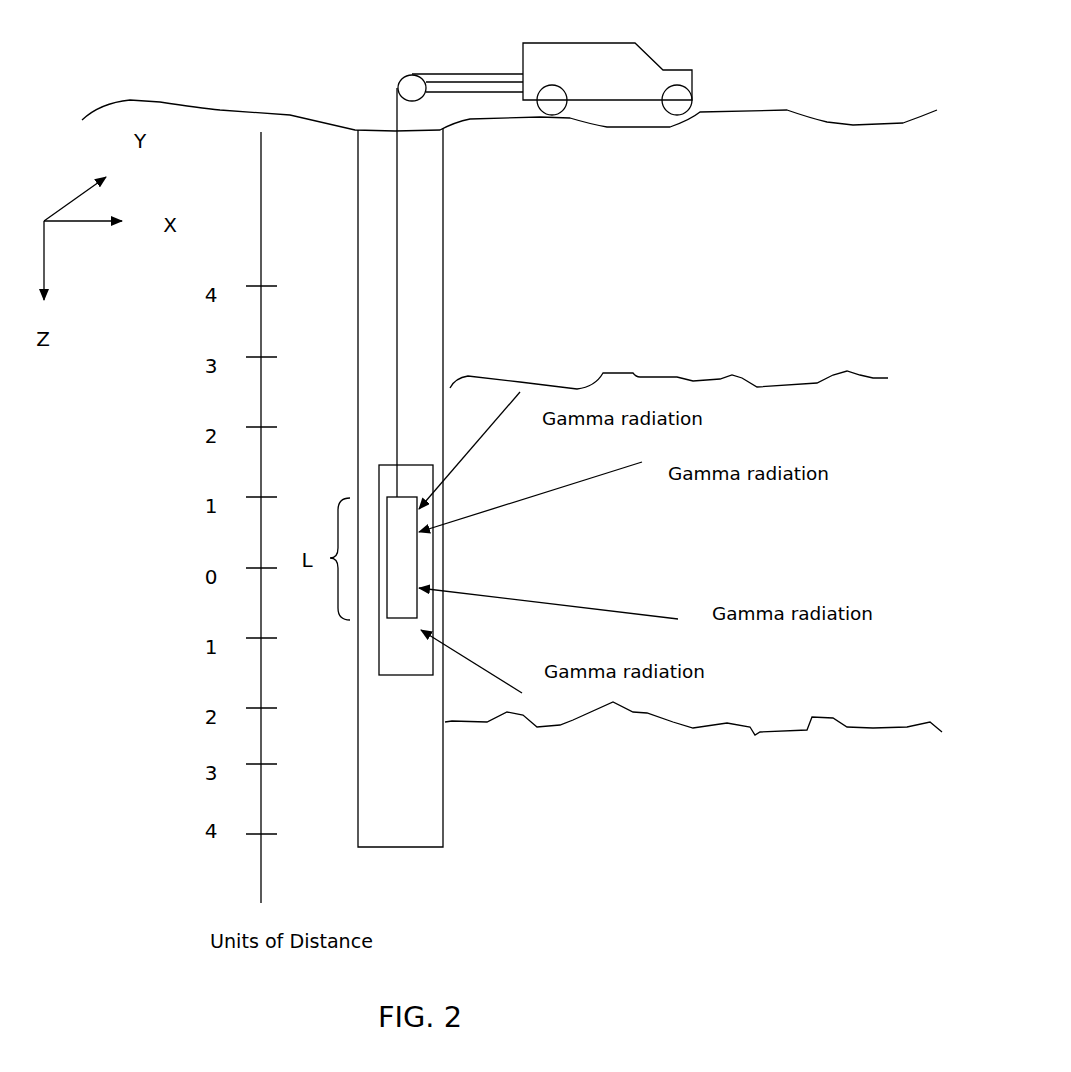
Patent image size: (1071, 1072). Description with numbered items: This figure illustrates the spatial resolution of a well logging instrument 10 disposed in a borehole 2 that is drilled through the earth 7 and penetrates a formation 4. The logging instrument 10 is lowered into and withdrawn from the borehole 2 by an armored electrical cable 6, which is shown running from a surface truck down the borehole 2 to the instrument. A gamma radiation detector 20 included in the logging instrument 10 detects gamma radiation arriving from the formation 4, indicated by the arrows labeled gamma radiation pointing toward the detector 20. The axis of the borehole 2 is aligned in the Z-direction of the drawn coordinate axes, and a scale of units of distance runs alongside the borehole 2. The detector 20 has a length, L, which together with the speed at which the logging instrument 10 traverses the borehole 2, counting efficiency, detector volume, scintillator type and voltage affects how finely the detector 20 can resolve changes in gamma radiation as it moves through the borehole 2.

The borehole 2 is at (425, 214).
The formations 4 is at (693, 553).
The armored electrical cable 6 is at (399, 299).
The earth 7 is at (509, 172).
The well logging instrument 10 is at (390, 682).
The gamma radiation detector 20 is at (403, 622).